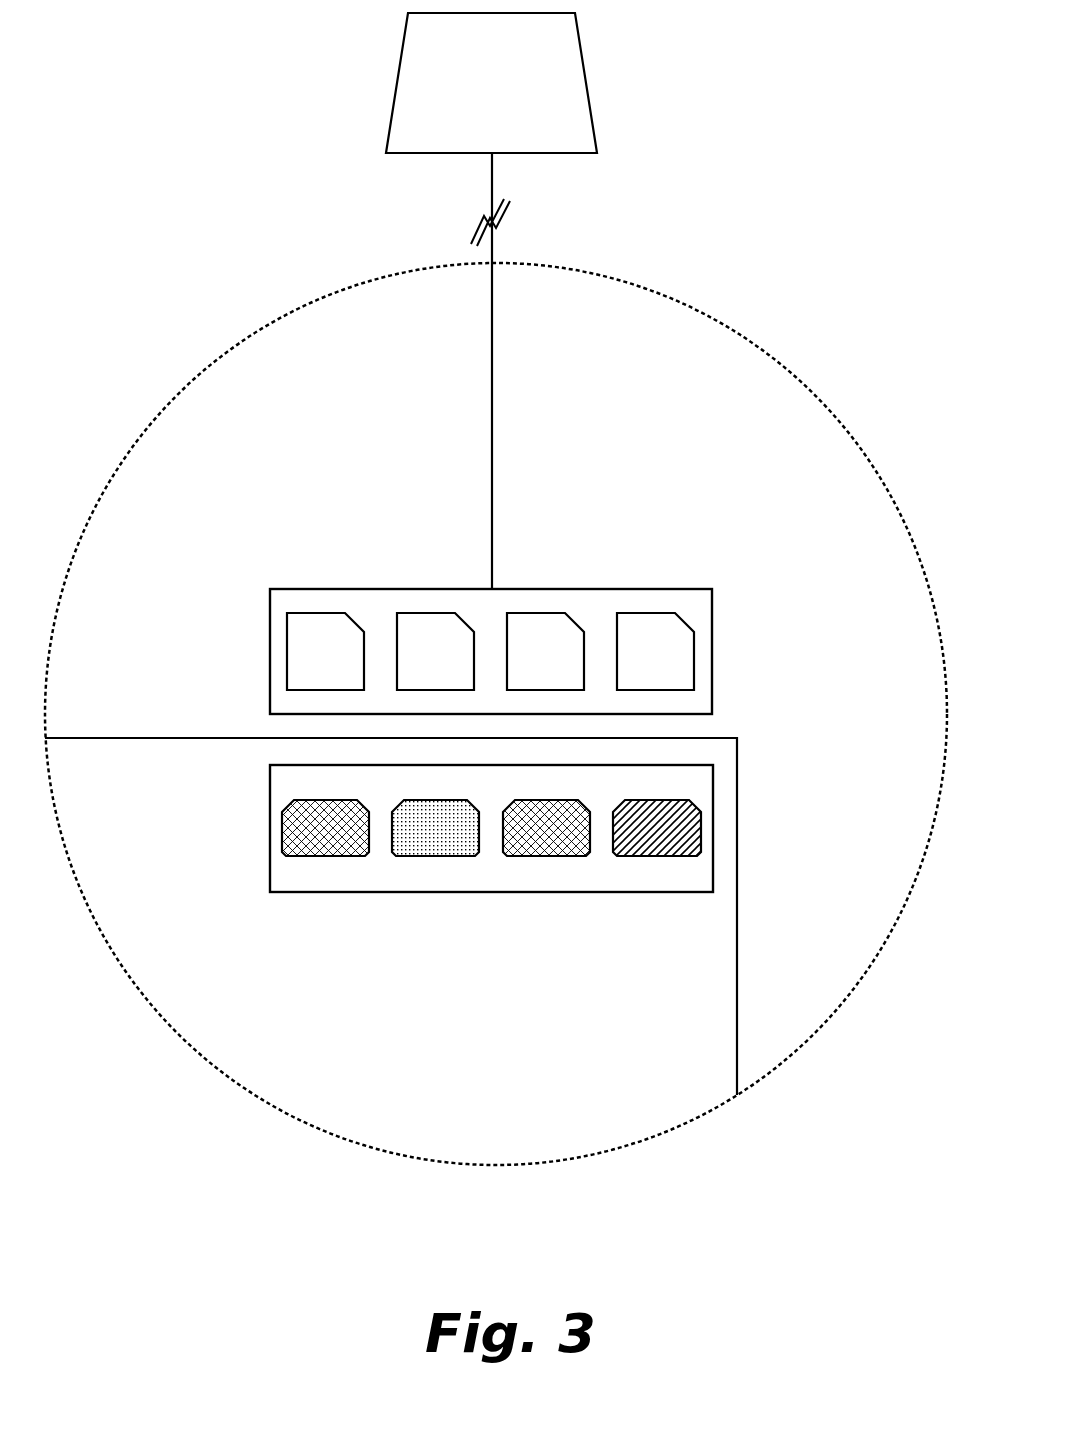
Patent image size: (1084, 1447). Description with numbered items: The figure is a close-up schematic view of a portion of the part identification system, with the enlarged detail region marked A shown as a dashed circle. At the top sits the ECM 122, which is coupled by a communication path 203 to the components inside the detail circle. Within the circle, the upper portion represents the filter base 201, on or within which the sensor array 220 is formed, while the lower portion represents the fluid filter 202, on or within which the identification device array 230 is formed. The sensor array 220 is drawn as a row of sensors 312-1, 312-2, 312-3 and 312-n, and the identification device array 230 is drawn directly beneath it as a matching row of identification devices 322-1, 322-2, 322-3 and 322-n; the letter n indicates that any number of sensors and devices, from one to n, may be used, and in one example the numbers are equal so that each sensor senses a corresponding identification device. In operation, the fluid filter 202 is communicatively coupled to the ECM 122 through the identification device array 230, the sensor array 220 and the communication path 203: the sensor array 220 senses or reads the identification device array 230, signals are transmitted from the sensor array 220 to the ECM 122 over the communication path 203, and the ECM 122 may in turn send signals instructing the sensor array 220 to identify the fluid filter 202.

The ECM 122 is at (473, 109).
The detail region A is at (496, 679).
The filter base 201 is at (865, 903).
The fluid filter 202 is at (337, 1075).
The communication path 203 is at (492, 337).
The sensor array 220 is at (617, 528).
The identification device array 230 is at (401, 920).
The sensor 312-1 is at (356, 664).
The sensor 312-2 is at (466, 664).
The sensor 312-3 is at (576, 664).
The sensor 312-n is at (686, 664).
The identification device 322-1 is at (356, 839).
The identification device 322-2 is at (466, 839).
The identification device 322-3 is at (577, 839).
The identification device 322-n is at (688, 839).